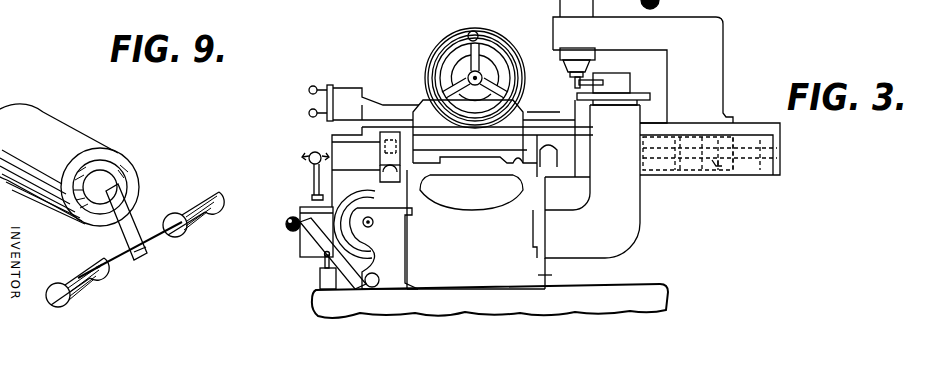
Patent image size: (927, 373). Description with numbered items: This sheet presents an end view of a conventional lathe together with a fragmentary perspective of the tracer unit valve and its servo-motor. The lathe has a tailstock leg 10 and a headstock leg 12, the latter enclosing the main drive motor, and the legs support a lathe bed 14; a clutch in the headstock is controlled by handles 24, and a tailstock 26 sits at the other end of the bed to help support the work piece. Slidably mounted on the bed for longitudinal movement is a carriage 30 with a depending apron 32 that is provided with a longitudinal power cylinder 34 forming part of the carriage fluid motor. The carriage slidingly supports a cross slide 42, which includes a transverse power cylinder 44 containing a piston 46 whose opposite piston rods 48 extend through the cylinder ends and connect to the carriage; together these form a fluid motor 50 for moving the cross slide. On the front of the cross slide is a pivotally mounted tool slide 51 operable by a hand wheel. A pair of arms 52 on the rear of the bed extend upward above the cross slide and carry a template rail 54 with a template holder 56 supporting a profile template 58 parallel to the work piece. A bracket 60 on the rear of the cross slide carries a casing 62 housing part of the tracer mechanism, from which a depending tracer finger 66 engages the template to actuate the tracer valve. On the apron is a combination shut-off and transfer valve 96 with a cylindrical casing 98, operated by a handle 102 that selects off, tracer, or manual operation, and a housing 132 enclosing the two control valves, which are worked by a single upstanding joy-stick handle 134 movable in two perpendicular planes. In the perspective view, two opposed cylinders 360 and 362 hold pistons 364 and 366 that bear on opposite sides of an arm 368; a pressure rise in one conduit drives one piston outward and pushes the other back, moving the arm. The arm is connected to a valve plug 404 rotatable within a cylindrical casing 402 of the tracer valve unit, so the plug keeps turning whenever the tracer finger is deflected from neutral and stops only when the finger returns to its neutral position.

In FIG. 3, the tailstock leg 10 is at (318, 306).
In FIG. 9, the headstock leg 12 is at (138, 4).
In FIG. 3, the lathe bed 14 is at (553, 277).
In FIG. 3, the handles 24 is at (294, 232).
In FIG. 3, the tailstock 26 is at (443, 78).
In FIG. 3, the carriage 30 is at (332, 148).
In FIG. 3, the apron 32 is at (300, 213).
In FIG. 3, the longitudinal power cylinder 34 is at (370, 190).
In FIG. 3, the cross slide 42 is at (573, 127).
In FIG. 3, the power cylinder 44 is at (718, 175).
In FIG. 3, the piston 46 is at (675, 175).
In FIG. 3, the piston rods 48 is at (760, 175).
In FIG. 3, the fluid motor 50 is at (703, 182).
In FIG. 3, the tool slide 51 is at (407, 105).
In FIG. 3, the arms 52 is at (632, 228).
In FIG. 3, the template rail 54 is at (632, 108).
In FIG. 3, the template holder 56 is at (632, 87).
In FIG. 3, the profile template 58 is at (590, 80).
In FIG. 3, the bracket 60 is at (723, 78).
In FIG. 3, the casing 62 is at (560, 11).
In FIG. 3, the tracer finger 66 is at (575, 84).
In FIG. 3, the combination shut-off and transfer valve 96 is at (320, 276).
In FIG. 3, the cylindrical casing 98 is at (615, 4).
In FIG. 3, the handle 102 is at (324, 262).
In FIG. 3, the housing 132 is at (300, 207).
In FIG. 3, the joy-stick handle 134 is at (316, 191).
In FIG. 9, the cylinder 360 is at (78, 298).
In FIG. 9, the cylinder 362 is at (196, 222).
In FIG. 9, the piston 364 is at (107, 275).
In FIG. 9, the piston 366 is at (153, 244).
In FIG. 9, the arm 368 is at (145, 262).
In FIG. 9, the cylindrical casing 402 is at (83, 137).
In FIG. 9, the valve plug 404 is at (120, 186).